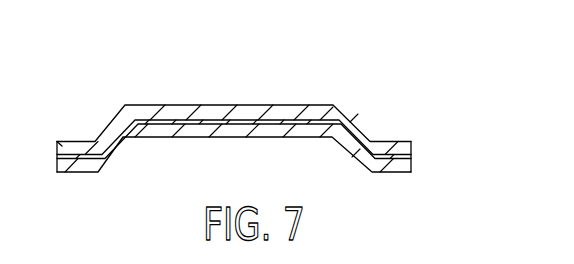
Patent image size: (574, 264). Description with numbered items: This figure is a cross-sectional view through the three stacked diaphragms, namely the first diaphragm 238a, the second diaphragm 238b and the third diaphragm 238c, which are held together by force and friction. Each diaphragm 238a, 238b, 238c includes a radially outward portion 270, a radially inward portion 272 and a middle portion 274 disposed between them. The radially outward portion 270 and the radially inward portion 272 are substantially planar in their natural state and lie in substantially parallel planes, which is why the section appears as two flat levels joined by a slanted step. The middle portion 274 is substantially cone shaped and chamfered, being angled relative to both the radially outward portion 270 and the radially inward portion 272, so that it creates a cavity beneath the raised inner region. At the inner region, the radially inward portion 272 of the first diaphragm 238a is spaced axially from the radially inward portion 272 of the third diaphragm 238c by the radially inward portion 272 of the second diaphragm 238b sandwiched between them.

The radially outward portion 270 is at (271, 124).
The radially inward portion 272 is at (271, 124).
The middle portion 274 is at (368, 80).
The first diaphragm 238a is at (405, 142).
The second diaphragm 238b is at (402, 156).
The third diaphragm 238c is at (399, 169).